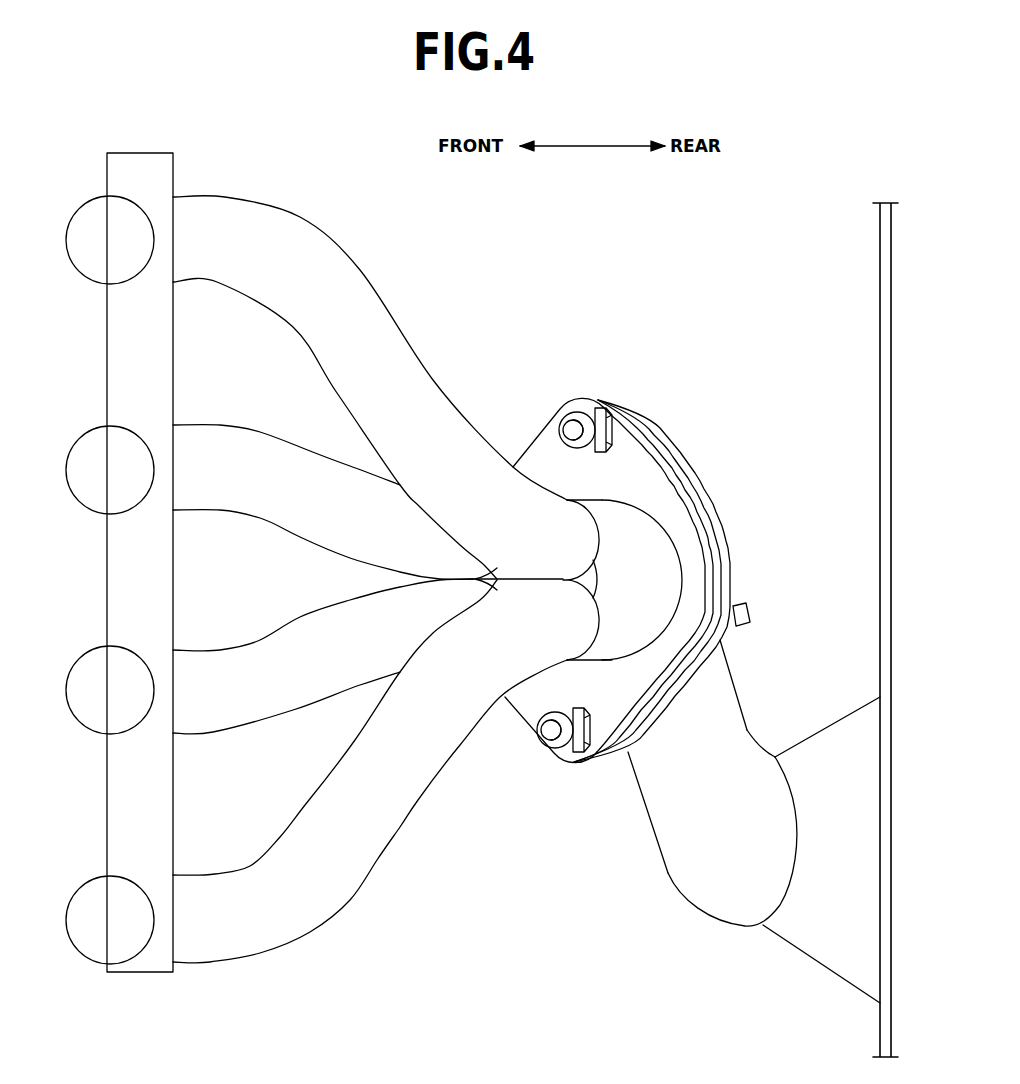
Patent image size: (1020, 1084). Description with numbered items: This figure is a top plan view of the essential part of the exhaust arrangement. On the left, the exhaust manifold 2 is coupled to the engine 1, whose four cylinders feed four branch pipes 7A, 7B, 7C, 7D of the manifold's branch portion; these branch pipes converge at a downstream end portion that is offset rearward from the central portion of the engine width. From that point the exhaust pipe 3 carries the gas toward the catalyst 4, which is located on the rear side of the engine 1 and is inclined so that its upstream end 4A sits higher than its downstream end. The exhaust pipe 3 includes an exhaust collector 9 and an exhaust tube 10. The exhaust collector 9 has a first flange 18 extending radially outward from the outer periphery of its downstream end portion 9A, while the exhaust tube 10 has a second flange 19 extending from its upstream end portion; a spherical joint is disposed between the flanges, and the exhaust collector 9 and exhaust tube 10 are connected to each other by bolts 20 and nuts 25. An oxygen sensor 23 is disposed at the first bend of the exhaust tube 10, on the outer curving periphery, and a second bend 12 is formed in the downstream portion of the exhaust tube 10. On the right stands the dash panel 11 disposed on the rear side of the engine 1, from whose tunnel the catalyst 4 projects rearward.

The engine 1 is at (150, 978).
The exhaust manifold 2 is at (392, 604).
The exhaust pipe 3 is at (651, 769).
The catalyst 4 is at (832, 737).
The upstream end 4A is at (774, 757).
The branch pipe 7A is at (216, 942).
The branch pipe 7B is at (216, 716).
The branch pipe 7C is at (216, 495).
The branch pipe 7D is at (216, 266).
The exhaust collector 9 is at (615, 643).
The downstream end portion 9A is at (680, 567).
The exhaust tube 10 is at (662, 815).
The dash panel 11 is at (880, 312).
The second bend 12 is at (713, 900).
The first flange 18 is at (630, 418).
The second flange 19 is at (652, 428).
The bolt 20 is at (566, 432).
The oxygen sensor 23 is at (749, 612).
The nut 25 is at (597, 410).